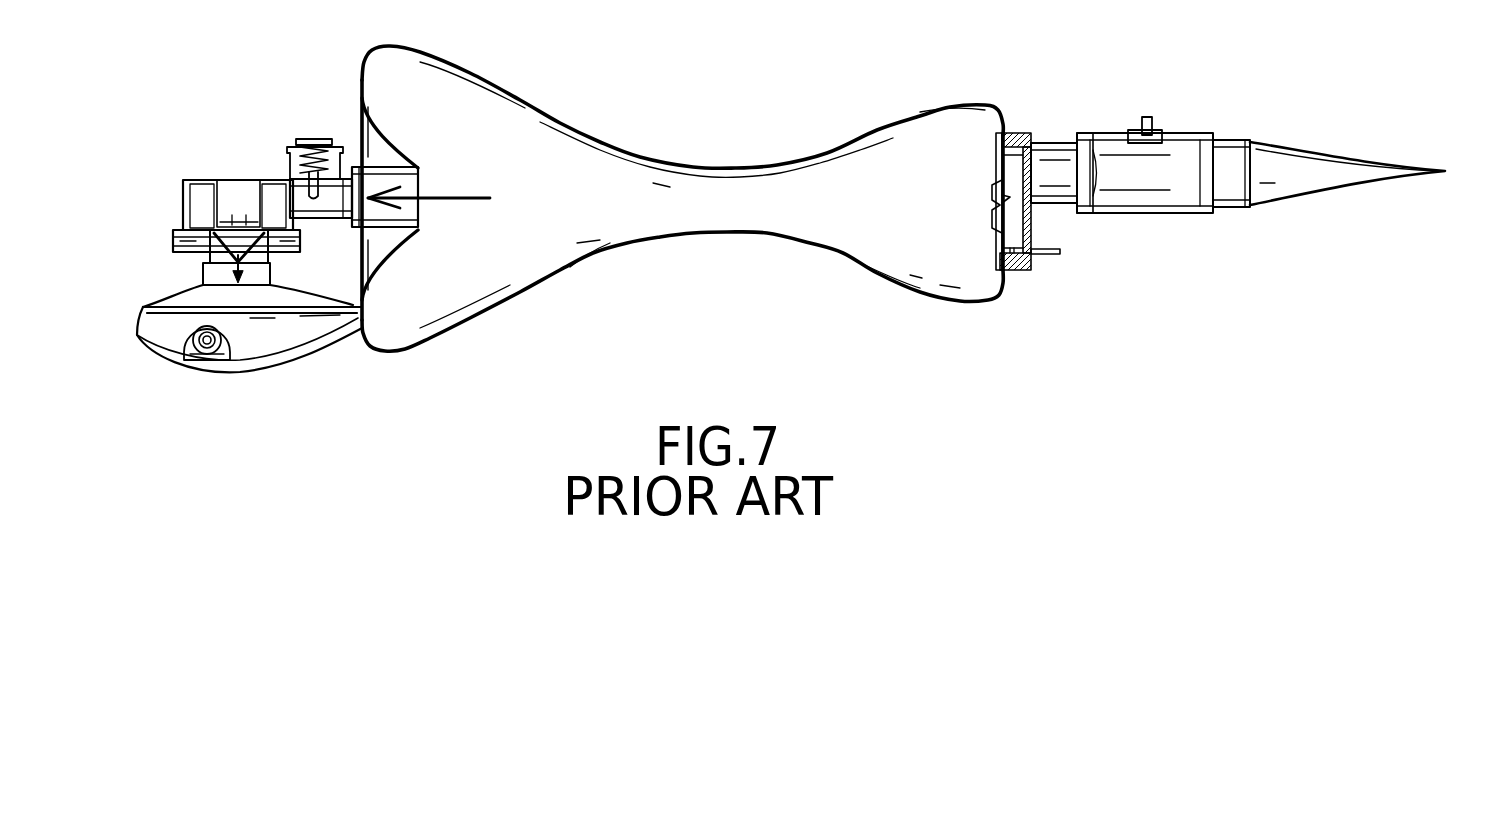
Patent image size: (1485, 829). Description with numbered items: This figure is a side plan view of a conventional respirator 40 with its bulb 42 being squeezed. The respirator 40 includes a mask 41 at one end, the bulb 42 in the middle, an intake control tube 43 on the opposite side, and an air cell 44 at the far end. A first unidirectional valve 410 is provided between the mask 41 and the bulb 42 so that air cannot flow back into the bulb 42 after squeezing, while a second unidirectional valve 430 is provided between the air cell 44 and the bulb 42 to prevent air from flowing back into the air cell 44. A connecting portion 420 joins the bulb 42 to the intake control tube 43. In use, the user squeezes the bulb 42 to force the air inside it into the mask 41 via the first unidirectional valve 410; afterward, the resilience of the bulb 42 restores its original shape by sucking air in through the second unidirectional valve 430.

The conventional respirator 40 is at (608, 90).
The mask 41 is at (313, 357).
The first unidirectional valve 410 is at (176, 240).
The bulb 42 is at (893, 120).
The flange plate 420 is at (1003, 133).
The intake control tube 43 is at (1155, 214).
The second unidirectional valve 430 is at (1160, 130).
The air cell 44 is at (1313, 150).